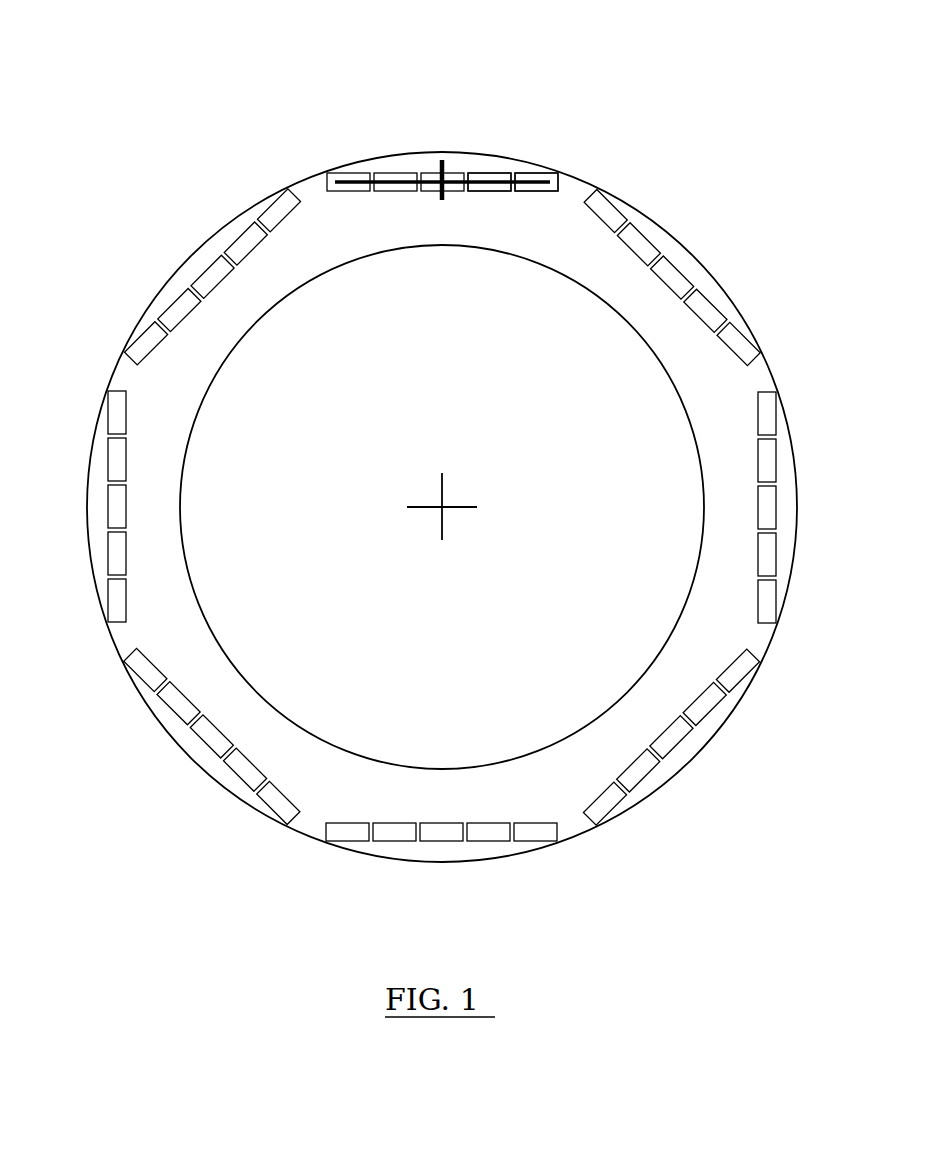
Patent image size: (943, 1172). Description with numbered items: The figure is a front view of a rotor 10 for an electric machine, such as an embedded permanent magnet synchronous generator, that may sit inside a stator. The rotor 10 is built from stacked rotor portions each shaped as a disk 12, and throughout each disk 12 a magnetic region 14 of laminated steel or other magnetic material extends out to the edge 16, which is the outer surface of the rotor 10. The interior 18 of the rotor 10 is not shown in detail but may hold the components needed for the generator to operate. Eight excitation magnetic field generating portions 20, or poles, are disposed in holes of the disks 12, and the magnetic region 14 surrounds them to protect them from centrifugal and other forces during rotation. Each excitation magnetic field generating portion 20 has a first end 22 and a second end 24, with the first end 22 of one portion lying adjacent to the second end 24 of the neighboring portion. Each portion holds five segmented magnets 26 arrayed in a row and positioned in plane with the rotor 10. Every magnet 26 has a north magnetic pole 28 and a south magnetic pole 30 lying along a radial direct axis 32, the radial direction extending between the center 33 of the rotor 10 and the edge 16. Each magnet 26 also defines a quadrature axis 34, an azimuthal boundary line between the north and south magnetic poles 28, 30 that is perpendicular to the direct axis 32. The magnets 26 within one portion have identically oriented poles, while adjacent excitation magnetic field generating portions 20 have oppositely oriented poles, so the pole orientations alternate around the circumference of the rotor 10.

The rotor 10 is at (732, 124).
The disk 12 is at (707, 267).
The magnetic region 14 is at (337, 234).
The edge 16 is at (197, 248).
The interior 18 is at (456, 366).
The excitation magnetic field generating portion 20 is at (403, 172).
The first end 22 is at (574, 182).
The second end 24 is at (300, 185).
The segmented magnet 26 is at (465, 192).
The north magnetic pole 28 is at (446, 180).
The south magnetic pole 30 is at (421, 194).
The direct axis 32 is at (447, 197).
The center 33 is at (443, 508).
The quadrature axis 34 is at (348, 186).